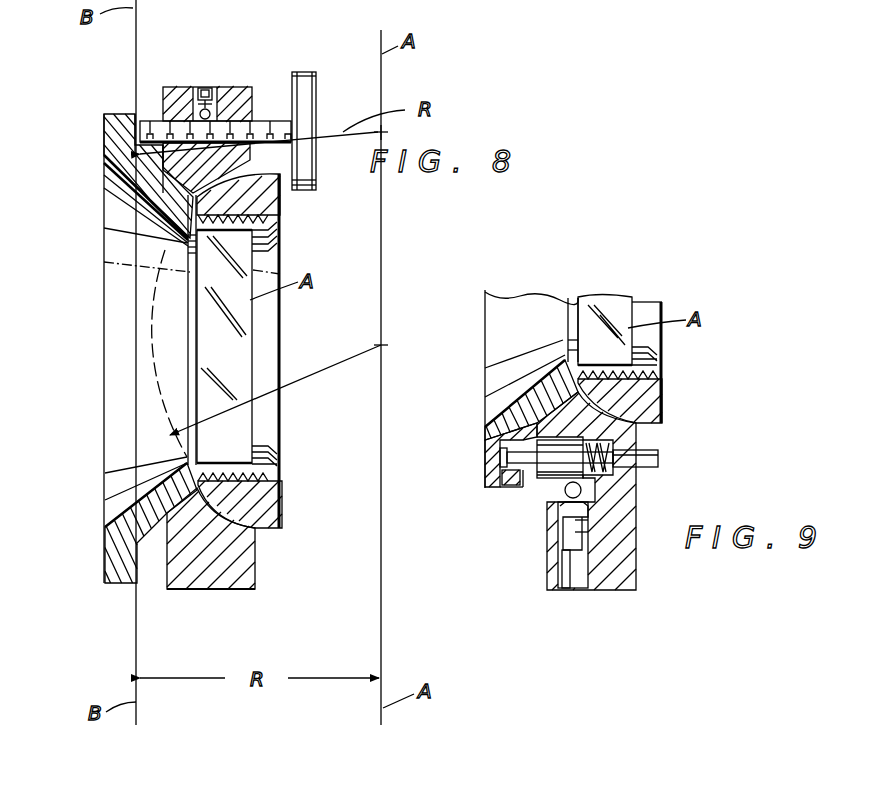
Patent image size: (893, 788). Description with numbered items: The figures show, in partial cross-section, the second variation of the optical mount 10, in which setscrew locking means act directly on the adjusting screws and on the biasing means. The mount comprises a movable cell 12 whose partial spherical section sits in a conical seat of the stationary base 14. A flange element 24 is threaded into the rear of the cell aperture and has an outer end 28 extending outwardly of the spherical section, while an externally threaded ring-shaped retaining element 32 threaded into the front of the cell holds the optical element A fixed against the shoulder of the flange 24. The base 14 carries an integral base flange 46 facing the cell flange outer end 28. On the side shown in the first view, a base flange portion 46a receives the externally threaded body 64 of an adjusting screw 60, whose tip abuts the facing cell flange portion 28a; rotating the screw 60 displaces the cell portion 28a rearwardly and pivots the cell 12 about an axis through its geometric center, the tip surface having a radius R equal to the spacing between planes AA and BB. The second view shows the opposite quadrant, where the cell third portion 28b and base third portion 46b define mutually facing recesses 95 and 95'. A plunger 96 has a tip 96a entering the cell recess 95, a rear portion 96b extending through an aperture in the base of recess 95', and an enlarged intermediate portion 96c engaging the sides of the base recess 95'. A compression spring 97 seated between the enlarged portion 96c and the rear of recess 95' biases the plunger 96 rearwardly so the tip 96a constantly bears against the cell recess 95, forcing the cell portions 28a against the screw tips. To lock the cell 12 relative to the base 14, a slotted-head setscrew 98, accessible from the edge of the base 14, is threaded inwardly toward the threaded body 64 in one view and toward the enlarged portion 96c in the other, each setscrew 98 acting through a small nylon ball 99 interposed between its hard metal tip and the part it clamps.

In FIG. 8, the optical mount 10 is at (336, 300).
In FIG. 9, the optical mount 10 is at (650, 292).
In FIG. 8, the movable cell 12 is at (285, 498).
In FIG. 9, the movable cell 12 is at (666, 400).
In FIG. 8, the stationary base 14 is at (260, 588).
In FIG. 9, the stationary base 14 is at (605, 592).
In FIG. 8, the flange element 24 is at (133, 193).
In FIG. 9, the flange element 24 is at (535, 395).
In FIG. 8, the outer end of the flange 28 is at (104, 555).
In FIG. 8, the cell flange portions 28a is at (104, 120).
In FIG. 9, the cell third portion 28b is at (487, 478).
In FIG. 8, the retaining element 32 is at (283, 249).
In FIG. 8, the base flange 46 is at (200, 590).
In FIG. 8, the base flange portions 46a is at (237, 87).
In FIG. 9, the base third portion 46b is at (548, 565).
In FIG. 8, the screw 60 is at (320, 92).
In FIG. 8, the externally threaded body 64 is at (268, 121).
In FIG. 9, the cell recess 95 is at (538, 480).
In FIG. 9, the base recess 95' is at (653, 481).
In FIG. 9, the plunger 96 is at (664, 458).
In FIG. 9, the plunger tip 96a is at (500, 455).
In FIG. 9, the plunger rear portion 96b is at (640, 448).
In FIG. 9, the enlarged intermediate portion 96c is at (543, 440).
In FIG. 9, the compression spring 97 is at (595, 465).
In FIG. 8, the setscrew 98 is at (200, 87).
In FIG. 9, the setscrew 98 is at (567, 590).
In FIG. 8, the nylon ball 99 is at (200, 110).
In FIG. 9, the nylon ball 99 is at (565, 495).